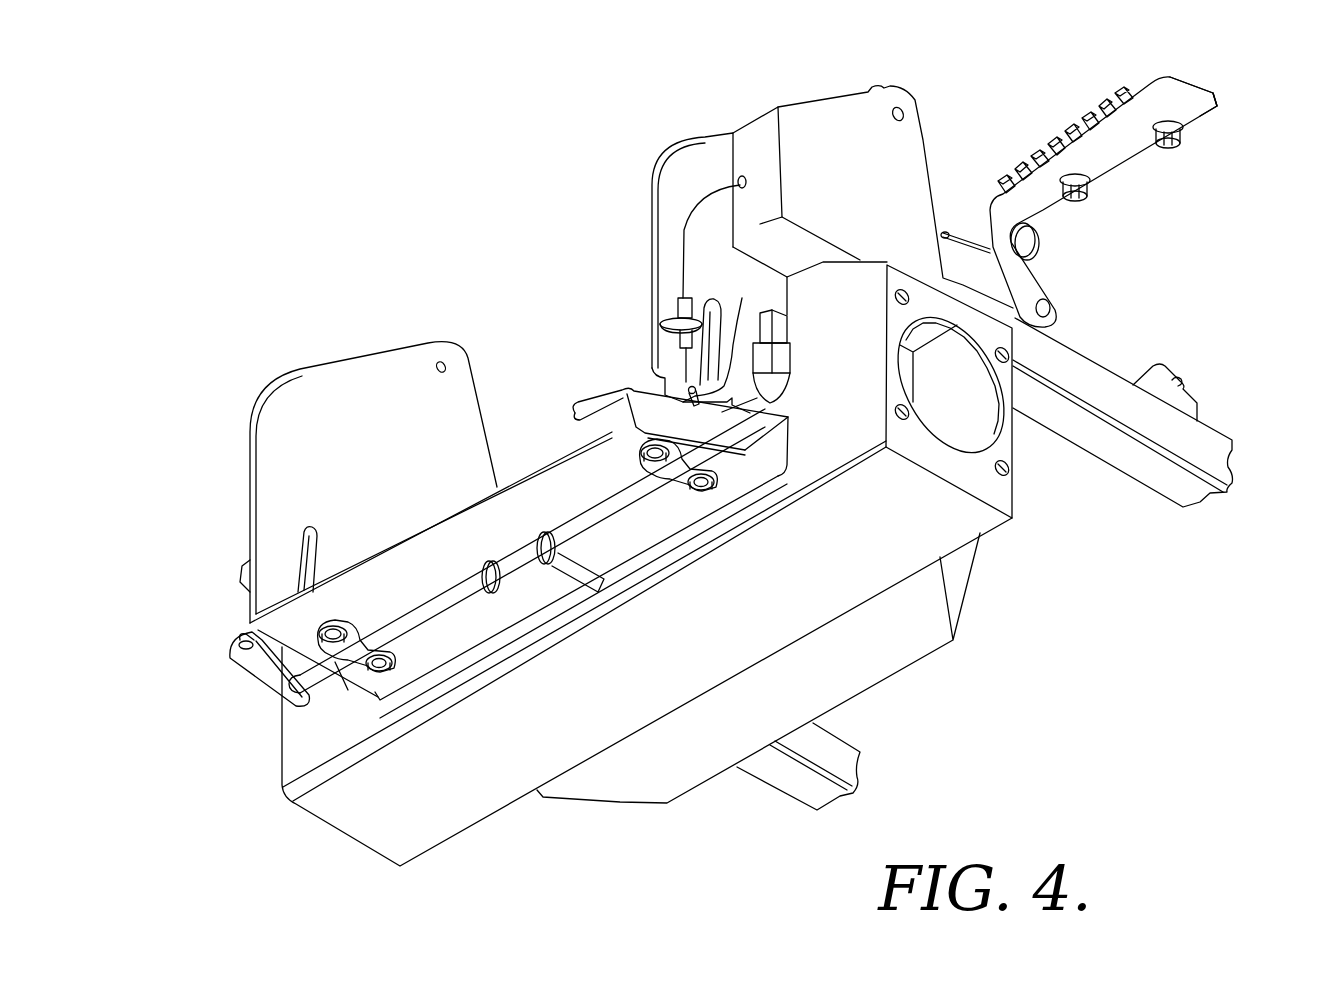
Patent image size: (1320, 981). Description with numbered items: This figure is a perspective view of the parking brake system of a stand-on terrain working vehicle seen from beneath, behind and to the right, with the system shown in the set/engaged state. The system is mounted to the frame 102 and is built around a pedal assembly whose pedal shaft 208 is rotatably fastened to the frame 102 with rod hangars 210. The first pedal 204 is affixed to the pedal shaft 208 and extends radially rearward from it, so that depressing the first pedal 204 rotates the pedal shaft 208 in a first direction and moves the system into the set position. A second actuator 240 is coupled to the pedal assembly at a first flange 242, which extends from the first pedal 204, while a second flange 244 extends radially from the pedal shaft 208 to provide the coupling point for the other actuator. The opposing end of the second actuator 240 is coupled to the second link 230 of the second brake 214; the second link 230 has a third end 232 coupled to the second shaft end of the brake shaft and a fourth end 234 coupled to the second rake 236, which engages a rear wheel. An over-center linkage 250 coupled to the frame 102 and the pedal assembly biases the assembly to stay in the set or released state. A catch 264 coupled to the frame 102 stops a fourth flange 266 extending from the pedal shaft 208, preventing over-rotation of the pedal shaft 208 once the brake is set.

The frame 102 is at (352, 377).
The first pedal 204 is at (610, 382).
The pedal shaft 208 is at (423, 612).
The rod hangars 210 is at (668, 476).
The second brake 214 is at (1067, 133).
The second link 230 is at (1137, 150).
The third end 232 is at (1057, 307).
The fourth end 234 is at (1215, 100).
The second rake 236 is at (1173, 85).
The second actuator 240 is at (693, 215).
The first flange 242 is at (742, 298).
The second flange 244 is at (264, 663).
The over-center linkage 250 is at (245, 640).
The catch 264 is at (787, 357).
The fourth flange 266 is at (775, 422).